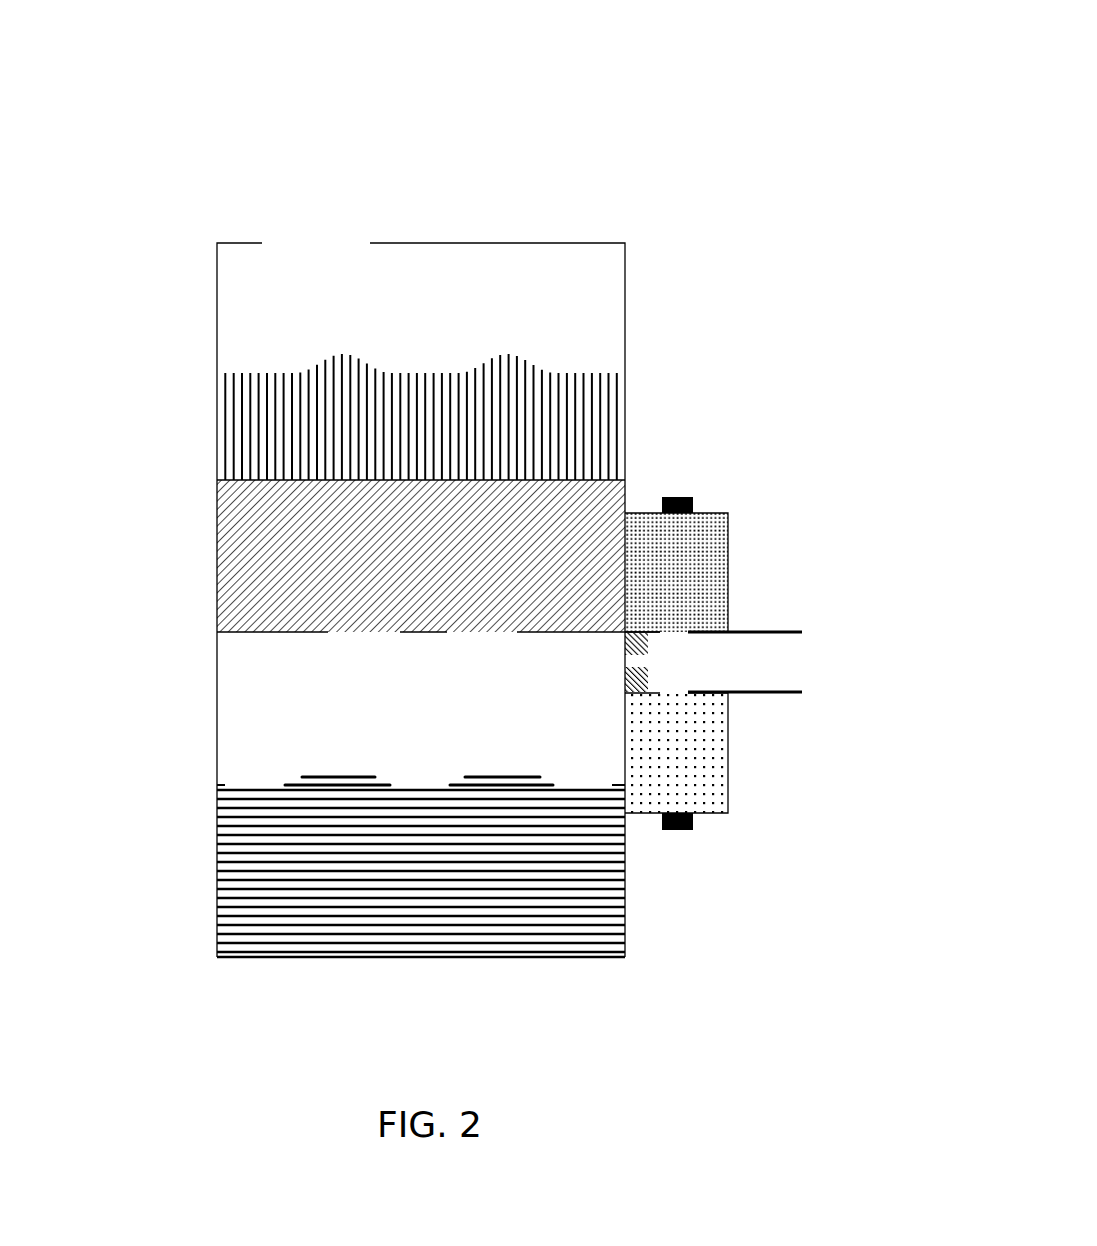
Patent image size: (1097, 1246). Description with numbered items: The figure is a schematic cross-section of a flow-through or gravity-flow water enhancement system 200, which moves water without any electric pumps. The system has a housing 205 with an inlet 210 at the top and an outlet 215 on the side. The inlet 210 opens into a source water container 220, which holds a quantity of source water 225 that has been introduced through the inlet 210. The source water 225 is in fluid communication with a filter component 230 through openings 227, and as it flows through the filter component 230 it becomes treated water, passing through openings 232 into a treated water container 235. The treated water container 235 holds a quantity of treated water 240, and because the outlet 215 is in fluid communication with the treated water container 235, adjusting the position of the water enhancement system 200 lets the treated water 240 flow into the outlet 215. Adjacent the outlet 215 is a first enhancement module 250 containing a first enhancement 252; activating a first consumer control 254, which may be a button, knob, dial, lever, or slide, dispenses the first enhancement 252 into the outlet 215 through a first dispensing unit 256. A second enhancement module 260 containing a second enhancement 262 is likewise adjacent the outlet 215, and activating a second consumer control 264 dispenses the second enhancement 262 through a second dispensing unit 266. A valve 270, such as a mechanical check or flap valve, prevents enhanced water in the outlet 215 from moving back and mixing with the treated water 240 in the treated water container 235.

The water enhancement system 200 is at (595, 188).
The housing 205 is at (215, 293).
The inlet 210 is at (307, 248).
The outlet 215 is at (732, 667).
The source water container 220 is at (450, 317).
The source water 225 is at (542, 437).
The openings 227 is at (477, 480).
The filter component 230 is at (543, 582).
The openings 232 is at (478, 632).
The treated water container 235 is at (452, 717).
The treated water 240 is at (452, 890).
The first enhancement module 250 is at (751, 512).
The first enhancement 252 is at (705, 582).
The first consumer control 254 is at (678, 497).
The first dispensing unit 256 is at (670, 633).
The second enhancement module 260 is at (752, 814).
The second enhancement 262 is at (705, 763).
The second consumer control 264 is at (678, 830).
The second dispensing unit 266 is at (672, 690).
The valve 270 is at (655, 660).